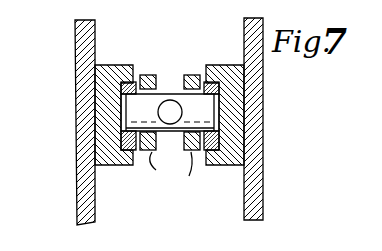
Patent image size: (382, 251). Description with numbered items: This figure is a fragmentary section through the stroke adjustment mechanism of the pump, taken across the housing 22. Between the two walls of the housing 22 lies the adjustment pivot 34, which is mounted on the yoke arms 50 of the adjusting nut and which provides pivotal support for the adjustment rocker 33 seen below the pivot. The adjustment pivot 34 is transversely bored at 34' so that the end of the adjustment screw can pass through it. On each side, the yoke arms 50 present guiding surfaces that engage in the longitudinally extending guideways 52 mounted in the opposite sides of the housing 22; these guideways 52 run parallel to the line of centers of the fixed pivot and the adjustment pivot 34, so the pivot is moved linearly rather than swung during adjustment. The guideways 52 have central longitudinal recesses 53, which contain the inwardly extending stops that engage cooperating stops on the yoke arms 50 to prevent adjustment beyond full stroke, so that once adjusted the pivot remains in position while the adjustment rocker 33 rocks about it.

The housing 22 is at (264, 168).
The yoke arms 50 is at (204, 66).
The guideways 52 is at (121, 164).
The central longitudinal recesses 53 is at (127, 123).
The adjustment pivot 34 is at (218, 112).
The transverse bore 34' is at (169, 93).
The adjustment rocker 33 is at (171, 168).